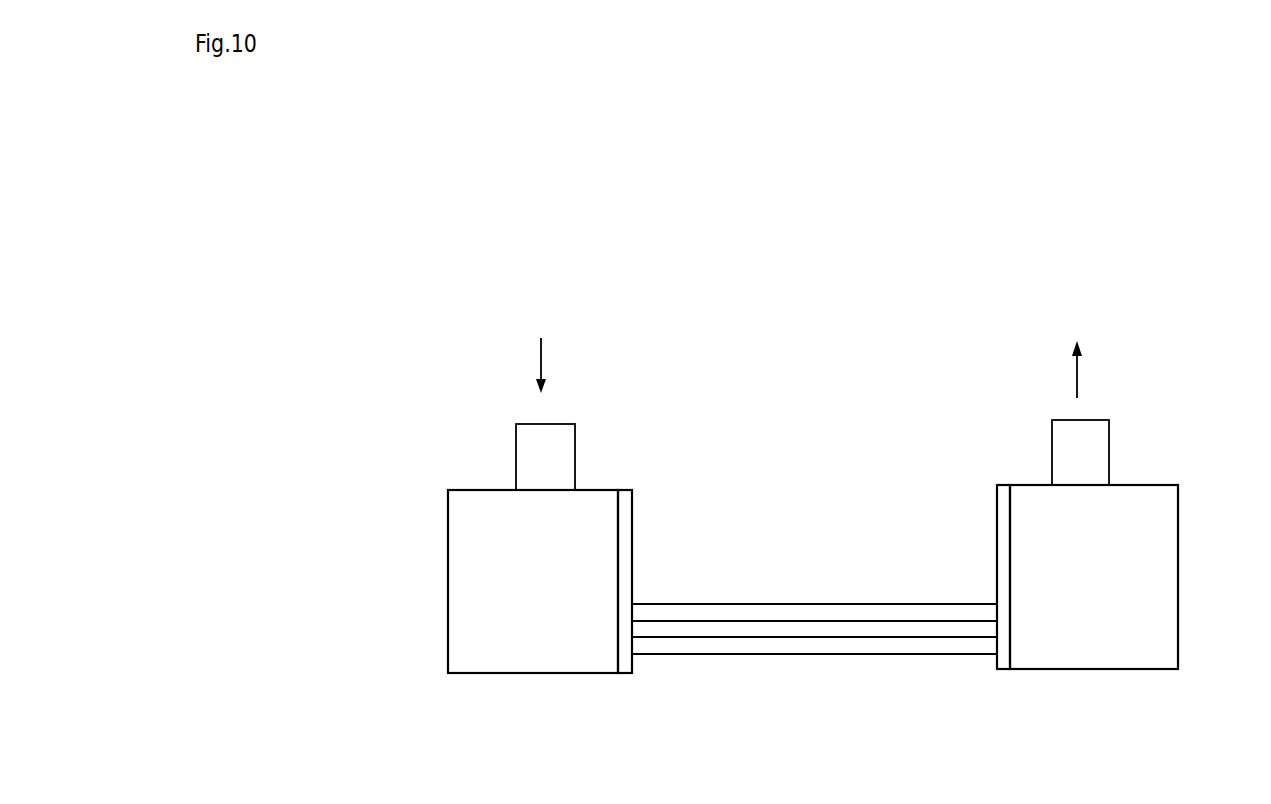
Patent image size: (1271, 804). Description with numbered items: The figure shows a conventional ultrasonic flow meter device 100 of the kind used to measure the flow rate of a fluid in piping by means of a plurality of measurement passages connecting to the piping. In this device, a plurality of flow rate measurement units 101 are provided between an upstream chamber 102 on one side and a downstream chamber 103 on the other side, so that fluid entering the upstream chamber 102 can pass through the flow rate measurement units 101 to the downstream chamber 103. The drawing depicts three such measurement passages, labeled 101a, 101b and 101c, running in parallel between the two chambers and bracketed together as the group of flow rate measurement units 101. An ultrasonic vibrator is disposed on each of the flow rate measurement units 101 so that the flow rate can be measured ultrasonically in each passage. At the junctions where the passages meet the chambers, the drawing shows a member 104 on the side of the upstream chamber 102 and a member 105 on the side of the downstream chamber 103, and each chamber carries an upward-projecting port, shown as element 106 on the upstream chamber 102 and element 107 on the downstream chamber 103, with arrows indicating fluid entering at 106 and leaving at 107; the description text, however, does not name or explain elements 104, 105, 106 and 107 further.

The ultrasonic flow meter device 100 is at (933, 347).
The flow rate measurement units 101 is at (814, 697).
The first channel 101a is at (735, 610).
The second channel 101b is at (817, 630).
The third channel 101c is at (696, 713).
The upstream chamber 102 is at (595, 488).
The downstream chamber 103 is at (1130, 487).
The inlet-side connecting plate 104 is at (635, 542).
The outlet-side connecting plate 105 is at (997, 560).
The inlet port 106 is at (575, 447).
The outlet port 107 is at (1112, 442).